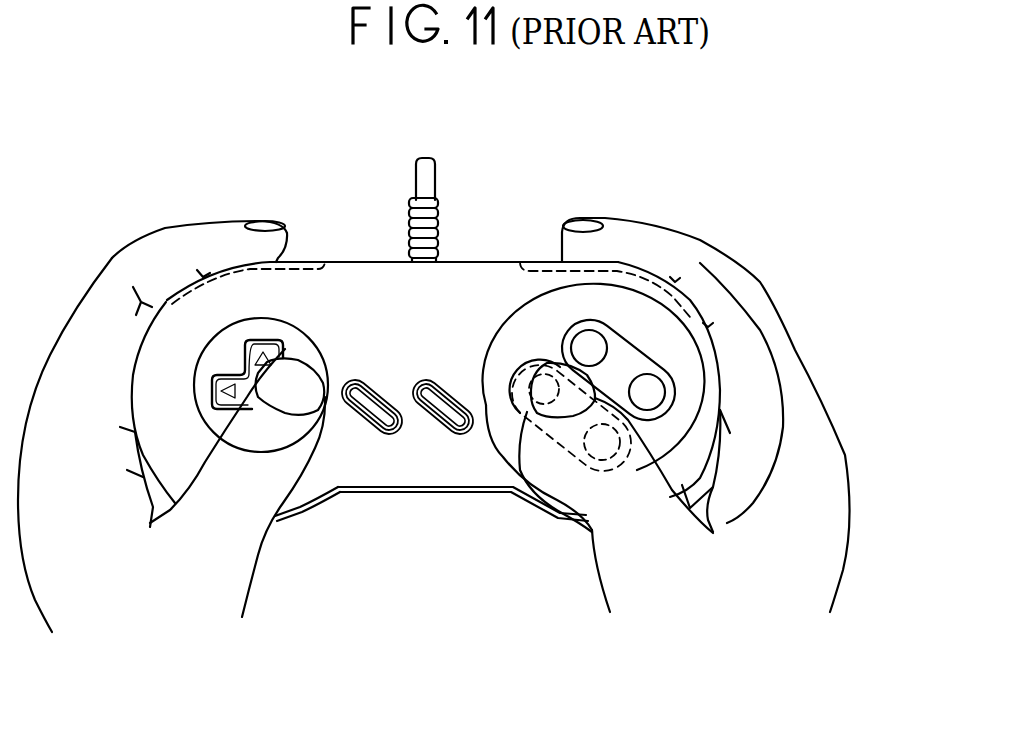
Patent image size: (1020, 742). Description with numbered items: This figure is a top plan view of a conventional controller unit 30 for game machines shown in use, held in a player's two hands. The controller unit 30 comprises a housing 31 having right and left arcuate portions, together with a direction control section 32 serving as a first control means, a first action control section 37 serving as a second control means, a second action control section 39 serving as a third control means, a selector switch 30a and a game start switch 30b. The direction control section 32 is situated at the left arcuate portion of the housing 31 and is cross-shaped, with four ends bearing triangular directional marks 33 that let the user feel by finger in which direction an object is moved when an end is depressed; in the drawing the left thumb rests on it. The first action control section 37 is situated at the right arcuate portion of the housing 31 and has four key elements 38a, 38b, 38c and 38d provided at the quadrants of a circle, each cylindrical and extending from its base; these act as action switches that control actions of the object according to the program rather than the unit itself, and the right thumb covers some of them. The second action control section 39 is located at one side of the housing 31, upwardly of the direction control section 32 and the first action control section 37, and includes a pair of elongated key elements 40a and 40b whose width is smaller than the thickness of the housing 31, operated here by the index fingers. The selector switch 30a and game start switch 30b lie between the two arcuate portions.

The controller unit 30 is at (462, 235).
The housing 31 is at (342, 250).
The direction control section 32 is at (295, 345).
The triangular directional marks 33 is at (216, 373).
The first action control section 37 is at (653, 347).
The key element 38a is at (590, 342).
The key element 38b is at (530, 414).
The key element 38c is at (603, 460).
The key element 38d is at (652, 390).
The second action control section 39 is at (503, 249).
The elongated key element 40a is at (302, 261).
The elongated key element 40b is at (533, 261).
The selector switch 30a is at (383, 413).
The game start switch 30b is at (455, 415).